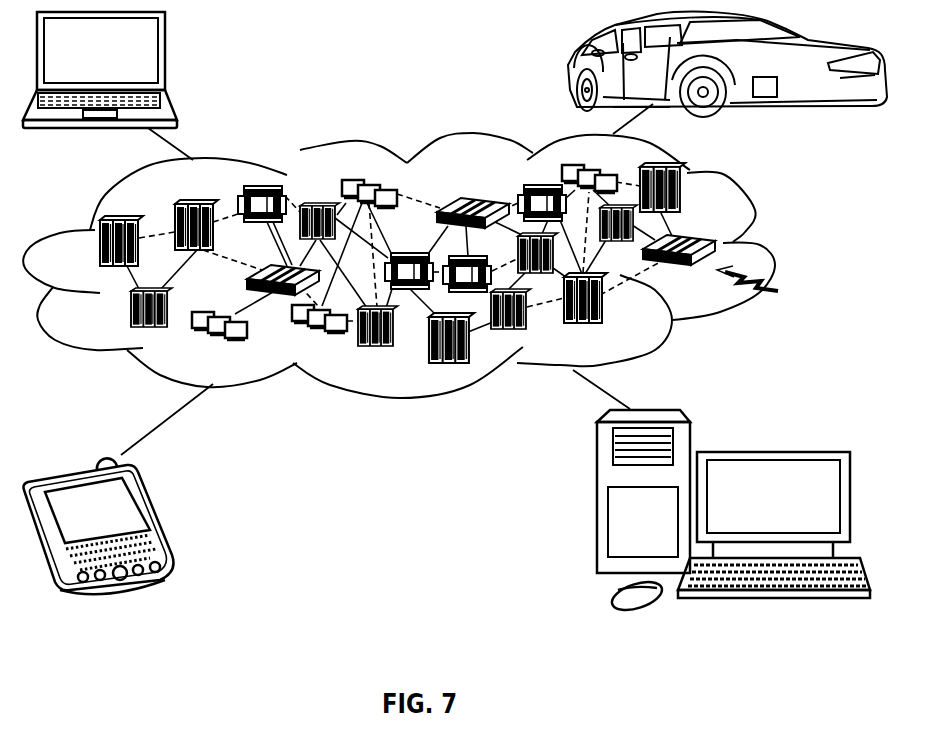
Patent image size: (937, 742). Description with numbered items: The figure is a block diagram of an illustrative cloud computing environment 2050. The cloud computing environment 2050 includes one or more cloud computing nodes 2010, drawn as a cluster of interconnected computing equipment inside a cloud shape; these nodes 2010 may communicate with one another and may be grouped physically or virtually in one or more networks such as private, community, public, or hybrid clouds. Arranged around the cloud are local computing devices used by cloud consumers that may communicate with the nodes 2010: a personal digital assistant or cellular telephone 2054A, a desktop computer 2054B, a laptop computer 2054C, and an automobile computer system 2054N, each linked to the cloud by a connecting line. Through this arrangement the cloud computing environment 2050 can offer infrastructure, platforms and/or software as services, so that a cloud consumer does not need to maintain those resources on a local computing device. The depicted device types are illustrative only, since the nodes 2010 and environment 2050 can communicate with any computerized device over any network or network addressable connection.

The cloud computing environment 2050 is at (767, 248).
The cloud computing nodes 2010 is at (772, 286).
The personal digital assistant or cellular telephone 2054A is at (157, 518).
The desktop computer 2054B is at (777, 437).
The laptop computer 2054C is at (166, 54).
The automobile computer system 2054N is at (566, 65).